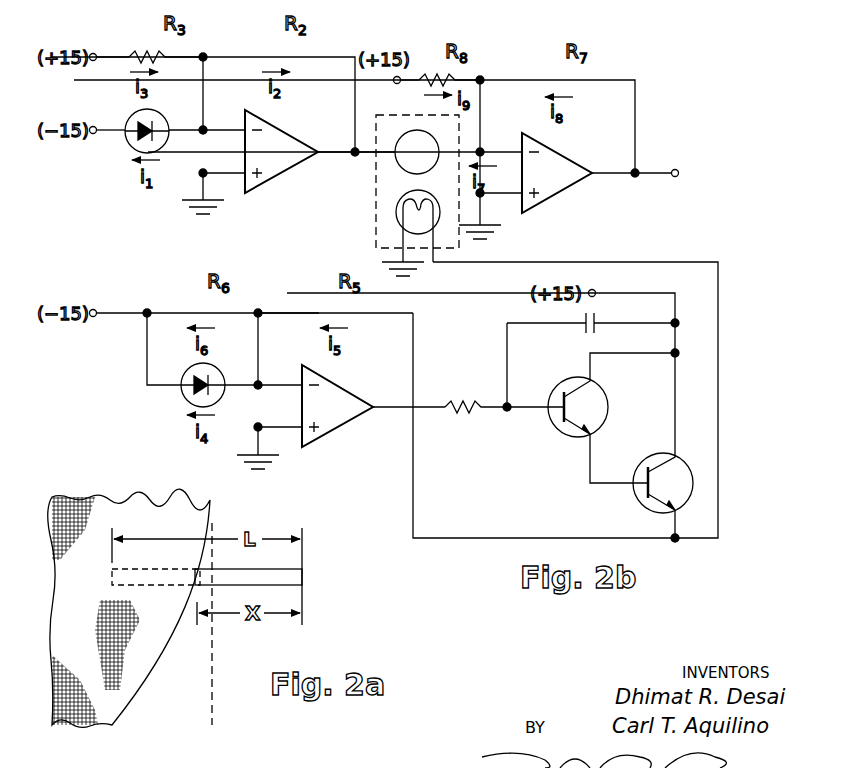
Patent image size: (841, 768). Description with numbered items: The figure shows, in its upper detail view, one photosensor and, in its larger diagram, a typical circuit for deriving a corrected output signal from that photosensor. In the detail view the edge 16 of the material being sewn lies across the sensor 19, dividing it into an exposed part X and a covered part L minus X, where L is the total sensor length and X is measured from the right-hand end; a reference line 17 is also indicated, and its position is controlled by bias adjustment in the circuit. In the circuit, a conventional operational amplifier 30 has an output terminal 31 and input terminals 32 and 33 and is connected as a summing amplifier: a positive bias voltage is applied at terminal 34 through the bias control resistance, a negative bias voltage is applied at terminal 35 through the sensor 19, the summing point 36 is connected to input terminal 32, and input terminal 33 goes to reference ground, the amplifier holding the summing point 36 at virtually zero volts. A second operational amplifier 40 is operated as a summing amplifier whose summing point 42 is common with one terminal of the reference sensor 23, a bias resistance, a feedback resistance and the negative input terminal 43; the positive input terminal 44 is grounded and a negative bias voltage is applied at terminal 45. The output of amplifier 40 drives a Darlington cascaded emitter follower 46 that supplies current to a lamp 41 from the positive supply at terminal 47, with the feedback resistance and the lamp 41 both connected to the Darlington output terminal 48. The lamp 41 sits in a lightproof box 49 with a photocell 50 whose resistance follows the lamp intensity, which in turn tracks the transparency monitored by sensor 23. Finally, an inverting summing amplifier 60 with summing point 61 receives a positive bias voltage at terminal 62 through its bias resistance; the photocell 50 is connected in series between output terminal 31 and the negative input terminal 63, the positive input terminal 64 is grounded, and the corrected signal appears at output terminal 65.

In FIG. 2a, the edge of material being sewn 16 is at (146, 683).
In FIG. 2a, the reference line 17 is at (214, 662).
In FIG. 2b, the sensor 19 is at (132, 115).
In FIG. 2a, the sensor 19 is at (298, 578).
In FIG. 2b, the reference sensor 23 is at (188, 373).
In FIG. 2b, the operational amplifier 30 is at (283, 150).
In FIG. 2b, the output terminal 31 is at (355, 158).
In FIG. 2b, the input terminal 32 is at (205, 129).
In FIG. 2b, the input terminal 33 is at (205, 172).
In FIG. 2b, the terminal 34 is at (94, 54).
In FIG. 2b, the terminal 35 is at (93, 134).
In FIG. 2b, the summing point 36 is at (205, 56).
In FIG. 2b, the operational amplifier 40 is at (340, 404).
In FIG. 2b, the lamp 41 is at (407, 201).
In FIG. 2b, the summing point 42 is at (260, 311).
In FIG. 2b, the negative input terminal 43 is at (260, 384).
In FIG. 2b, the positive input terminal 44 is at (260, 426).
In FIG. 2b, the terminal 45 is at (95, 310).
In FIG. 2b, the Darlington cascaded emitter follower 46 is at (568, 453).
In FIG. 2b, the terminal 47 is at (595, 292).
In FIG. 2b, the output terminal 48 is at (676, 543).
In FIG. 2b, the lightproof box 49 is at (376, 214).
In FIG. 2b, the photocell 50 is at (405, 141).
In FIG. 2b, the inverting type summing amplifier 60 is at (557, 163).
In FIG. 2b, the summing point 61 is at (482, 78).
In FIG. 2b, the terminal 62 is at (396, 84).
In FIG. 2b, the negative input terminal 63 is at (482, 152).
In FIG. 2b, the positive input terminal 64 is at (482, 197).
In FIG. 2b, the output terminal 65 is at (679, 172).